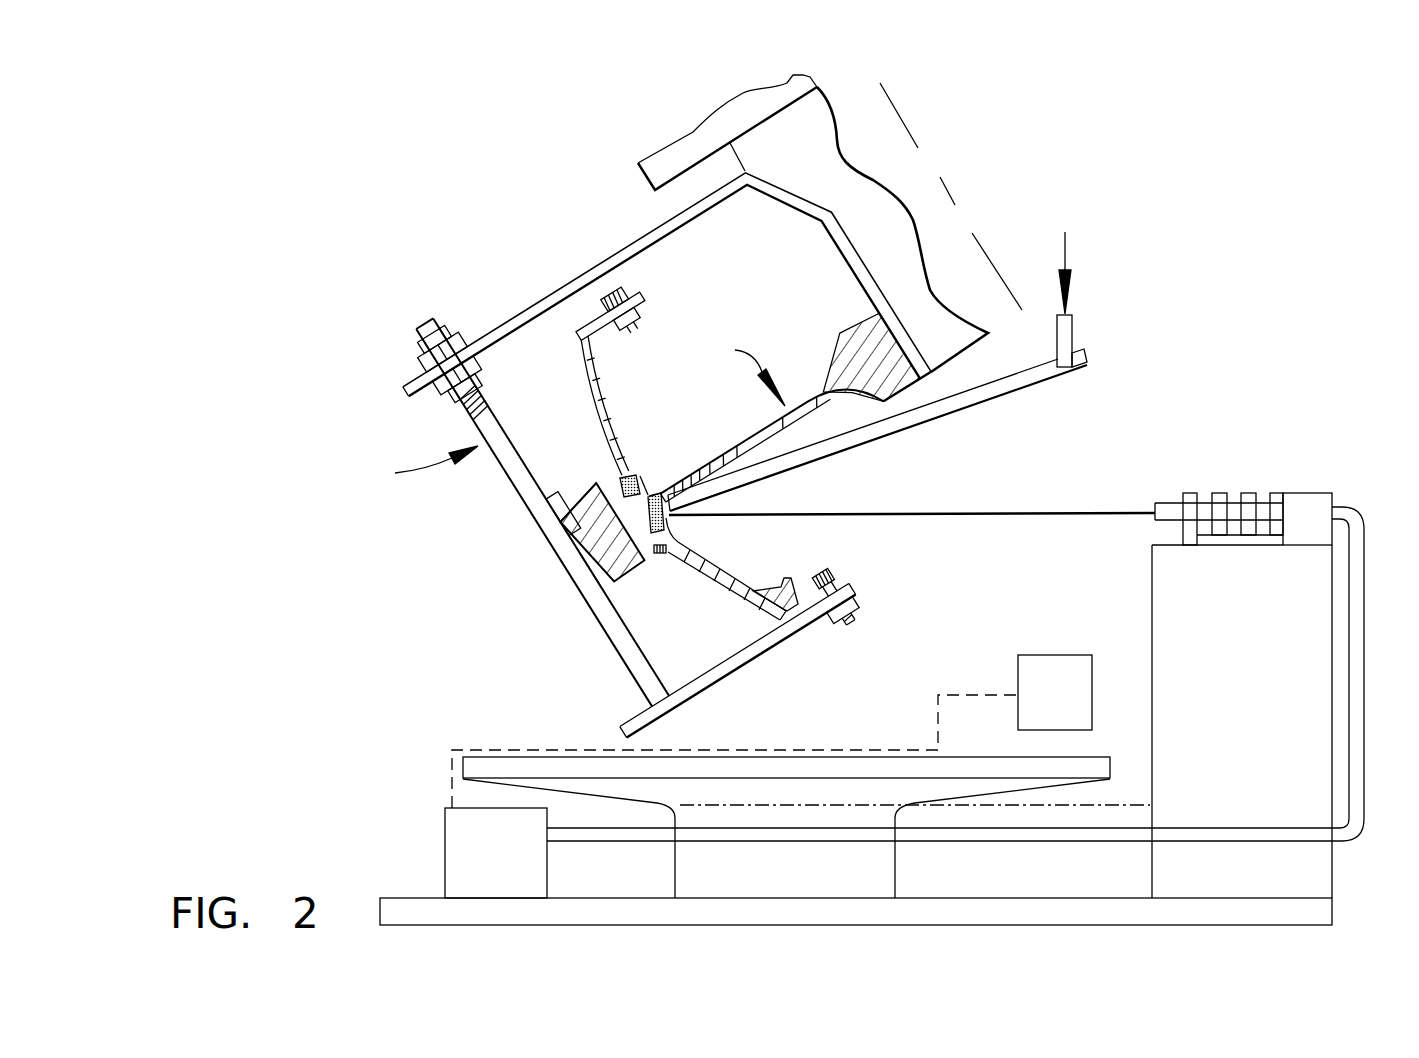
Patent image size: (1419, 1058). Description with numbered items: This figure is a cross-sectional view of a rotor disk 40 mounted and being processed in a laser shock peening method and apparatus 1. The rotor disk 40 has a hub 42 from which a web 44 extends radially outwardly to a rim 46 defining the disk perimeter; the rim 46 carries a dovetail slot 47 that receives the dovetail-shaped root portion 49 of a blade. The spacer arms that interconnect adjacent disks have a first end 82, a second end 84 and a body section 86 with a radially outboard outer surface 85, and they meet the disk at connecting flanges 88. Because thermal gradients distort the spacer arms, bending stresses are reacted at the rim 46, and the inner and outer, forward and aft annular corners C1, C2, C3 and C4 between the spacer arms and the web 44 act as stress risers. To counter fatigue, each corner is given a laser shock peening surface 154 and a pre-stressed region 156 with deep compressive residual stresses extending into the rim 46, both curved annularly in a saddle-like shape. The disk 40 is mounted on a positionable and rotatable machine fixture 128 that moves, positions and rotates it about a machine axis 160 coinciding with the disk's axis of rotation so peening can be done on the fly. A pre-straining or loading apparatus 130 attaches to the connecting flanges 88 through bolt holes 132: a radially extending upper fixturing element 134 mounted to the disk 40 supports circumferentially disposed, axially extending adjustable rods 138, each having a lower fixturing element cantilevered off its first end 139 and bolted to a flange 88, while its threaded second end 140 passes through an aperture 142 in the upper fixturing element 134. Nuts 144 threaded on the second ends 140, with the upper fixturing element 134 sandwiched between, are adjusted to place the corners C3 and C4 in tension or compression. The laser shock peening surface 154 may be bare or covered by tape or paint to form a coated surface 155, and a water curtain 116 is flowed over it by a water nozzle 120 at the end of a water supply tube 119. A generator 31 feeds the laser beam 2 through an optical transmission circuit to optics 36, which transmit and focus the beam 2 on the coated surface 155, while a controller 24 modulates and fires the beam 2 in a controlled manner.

The laser shock peening apparatus 1 is at (1158, 311).
The laser beam 2 is at (1035, 512).
The controller 24 is at (1068, 707).
The generator 31 is at (511, 870).
The optics 36 is at (1194, 492).
The rotor disk 40 is at (742, 372).
The hub 42 is at (842, 336).
The web 44 is at (766, 432).
The rim 46 is at (654, 493).
The dovetail slot 47 is at (596, 486).
The dovetail-shaped root portion 49 is at (572, 541).
The spacer arm first end 82 is at (707, 568).
The spacer arm second end 84 is at (607, 325).
The radially outboard outer surface 85 is at (762, 592).
The spacer arm body section 86 is at (598, 402).
The connecting flange 88 is at (633, 296).
The water curtain 116 is at (674, 523).
The water supply tube 119 is at (934, 419).
The water nozzle 120 is at (722, 504).
The machine fixture 128 is at (641, 160).
The pre-straining or loading apparatus 130 is at (415, 466).
The bolt hole 132 is at (623, 322).
The upper fixturing element 134 is at (641, 239).
The adjustable rod 138 is at (519, 487).
The first end 139 is at (671, 690).
The second end 140 is at (440, 330).
The aperture 142 is at (480, 352).
The nut 144 is at (440, 386).
The laser shock peening surface 154 is at (660, 503).
The coated surface 155 is at (690, 555).
The pre-stressed region 156 is at (612, 612).
The machine axis 160 is at (948, 185).
The annular corner C1 is at (640, 472).
The annular corner C2 is at (620, 485).
The annular corner C3 is at (583, 567).
The annular corner C4 is at (661, 555).